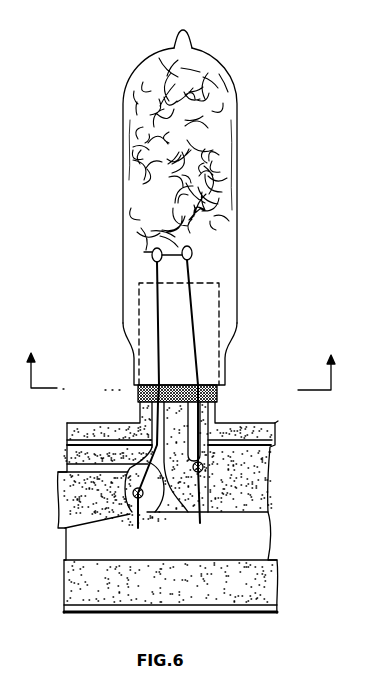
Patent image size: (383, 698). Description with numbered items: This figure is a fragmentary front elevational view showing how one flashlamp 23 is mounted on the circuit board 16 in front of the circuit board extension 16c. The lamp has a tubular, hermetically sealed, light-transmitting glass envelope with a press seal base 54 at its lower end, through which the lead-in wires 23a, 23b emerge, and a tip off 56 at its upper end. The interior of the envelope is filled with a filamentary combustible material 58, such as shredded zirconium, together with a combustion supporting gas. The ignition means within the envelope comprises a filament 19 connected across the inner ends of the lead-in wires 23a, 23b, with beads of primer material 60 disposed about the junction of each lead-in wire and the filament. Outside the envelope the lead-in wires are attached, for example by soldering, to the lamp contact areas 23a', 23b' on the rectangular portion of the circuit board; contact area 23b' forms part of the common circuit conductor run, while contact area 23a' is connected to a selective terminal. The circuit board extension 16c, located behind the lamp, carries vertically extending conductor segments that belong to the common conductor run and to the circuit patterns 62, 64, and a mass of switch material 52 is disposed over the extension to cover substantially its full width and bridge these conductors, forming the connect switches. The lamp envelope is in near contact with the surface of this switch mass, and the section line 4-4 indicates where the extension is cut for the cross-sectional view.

The section line 4- 4 is at (178, 360).
The circuit board 16 is at (272, 538).
The circuit board extension 16c is at (225, 306).
The filament 19 is at (190, 248).
The flashlamp 23 is at (209, 100).
The lead-in wire 23a is at (45, 445).
The lead-in wire 23b is at (295, 437).
The lamp contact area 23a' is at (139, 534).
The lamp contact area 23b' is at (205, 534).
The switch material 52 is at (226, 394).
The press seal base 54 is at (125, 347).
The tip off 56 is at (189, 41).
The filamentary combustible material 58 is at (193, 162).
The beads of primer material 60 is at (152, 253).
The conductive circuit pattern 62 is at (257, 433).
The circuit pattern 64 is at (110, 423).